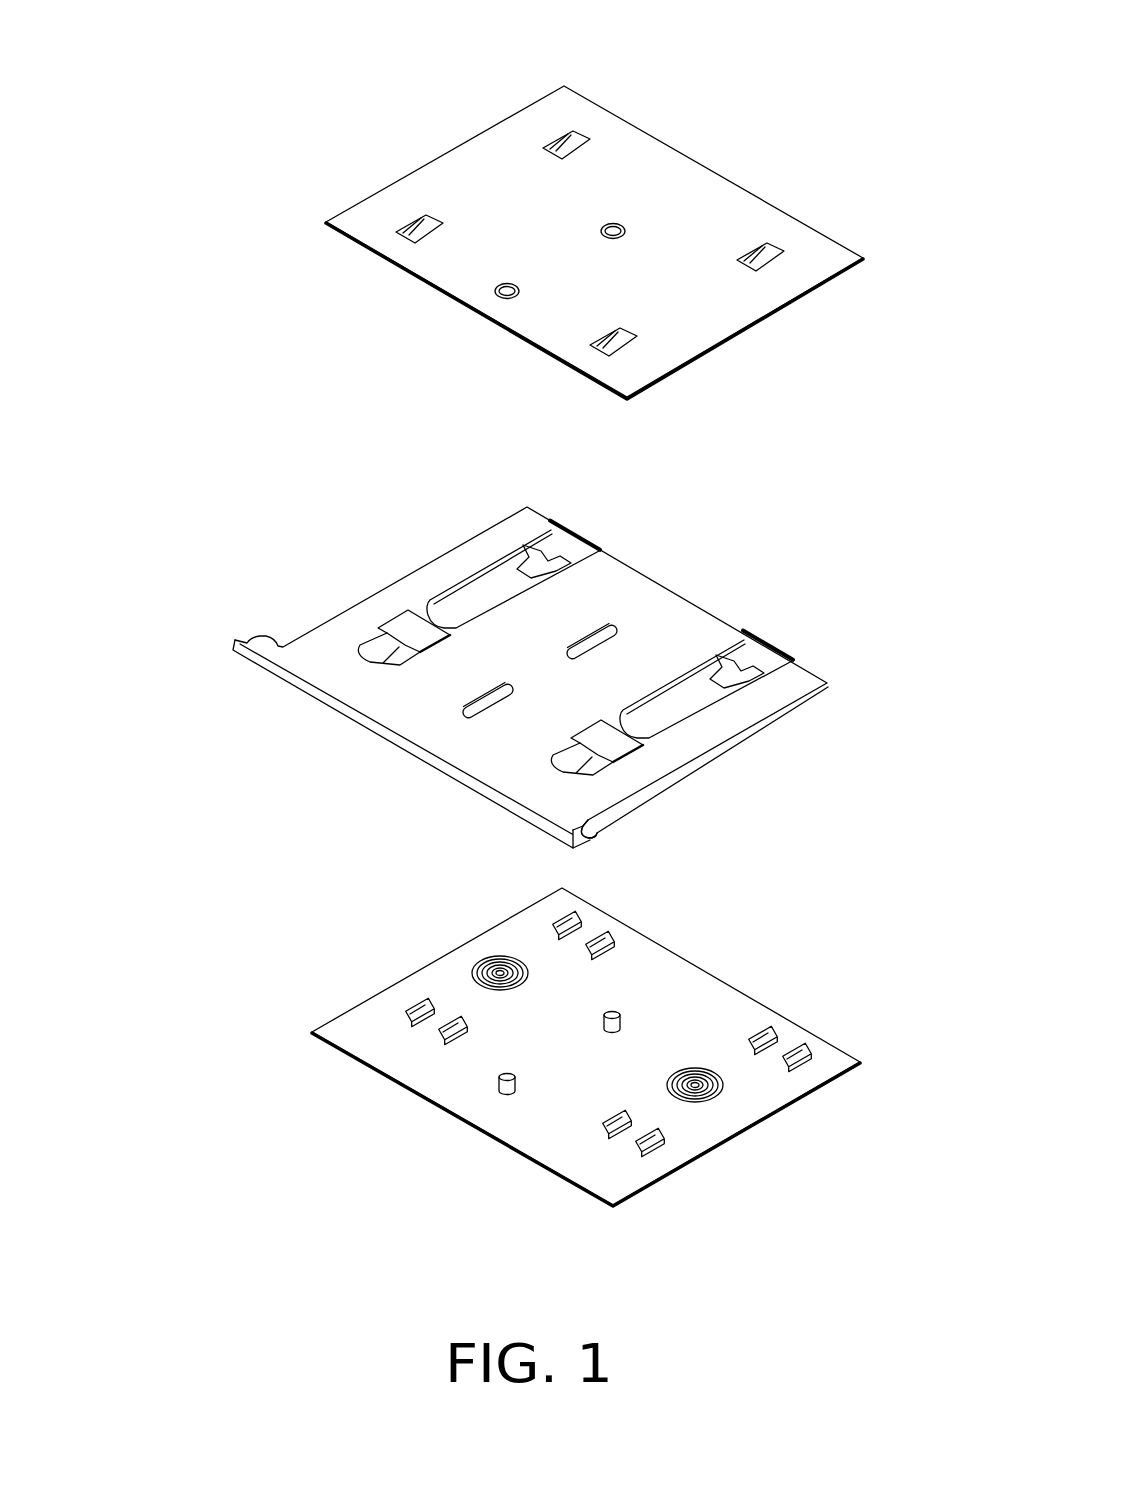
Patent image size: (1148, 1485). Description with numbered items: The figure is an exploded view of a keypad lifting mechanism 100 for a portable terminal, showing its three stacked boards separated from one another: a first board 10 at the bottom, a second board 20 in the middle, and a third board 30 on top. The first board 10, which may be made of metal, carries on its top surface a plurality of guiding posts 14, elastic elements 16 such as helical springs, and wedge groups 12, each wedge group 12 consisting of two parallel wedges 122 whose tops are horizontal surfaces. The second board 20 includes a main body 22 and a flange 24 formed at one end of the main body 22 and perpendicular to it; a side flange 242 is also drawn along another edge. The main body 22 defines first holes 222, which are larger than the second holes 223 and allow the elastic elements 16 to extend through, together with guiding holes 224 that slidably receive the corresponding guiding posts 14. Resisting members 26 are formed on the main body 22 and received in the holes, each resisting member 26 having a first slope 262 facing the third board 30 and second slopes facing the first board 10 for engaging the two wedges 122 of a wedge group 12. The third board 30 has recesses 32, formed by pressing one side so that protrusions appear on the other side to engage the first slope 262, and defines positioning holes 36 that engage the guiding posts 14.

The keypad lifting mechanism 100 is at (221, 103).
The third board 30 is at (704, 196).
The recesses 32 is at (773, 252).
The positioning holes 36 is at (601, 231).
The second board 20 is at (658, 618).
The main body 22 is at (697, 746).
The first holes 222 is at (480, 589).
The second holes 223 is at (372, 640).
The guiding holes 224 is at (487, 711).
The side flange 242 is at (379, 733).
The flange 24 is at (598, 836).
The resisting members 26 is at (576, 553).
The first slope 262 is at (538, 562).
The first board 10 is at (668, 988).
The wedge groups 12 is at (886, 1168).
The wedges 122 is at (788, 1062).
The guiding posts 14 is at (500, 1088).
The elastic elements 16 is at (695, 1093).